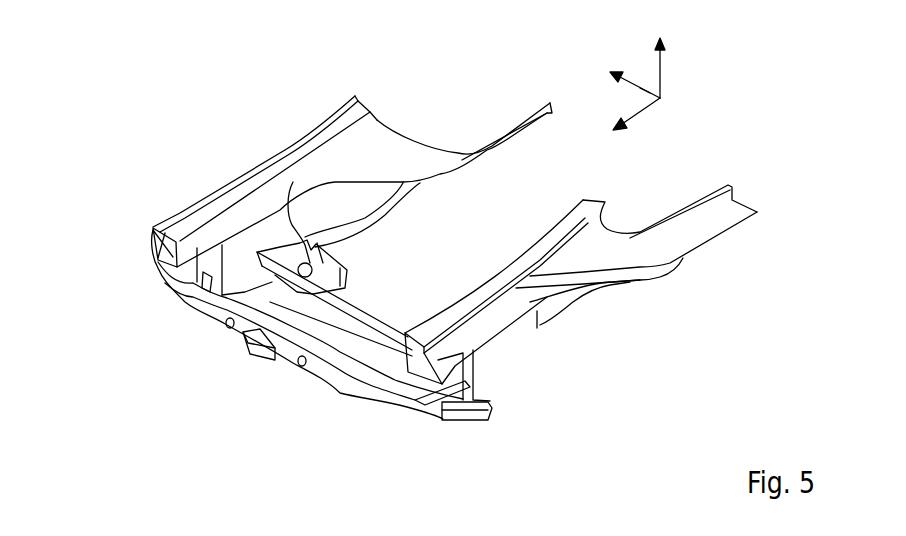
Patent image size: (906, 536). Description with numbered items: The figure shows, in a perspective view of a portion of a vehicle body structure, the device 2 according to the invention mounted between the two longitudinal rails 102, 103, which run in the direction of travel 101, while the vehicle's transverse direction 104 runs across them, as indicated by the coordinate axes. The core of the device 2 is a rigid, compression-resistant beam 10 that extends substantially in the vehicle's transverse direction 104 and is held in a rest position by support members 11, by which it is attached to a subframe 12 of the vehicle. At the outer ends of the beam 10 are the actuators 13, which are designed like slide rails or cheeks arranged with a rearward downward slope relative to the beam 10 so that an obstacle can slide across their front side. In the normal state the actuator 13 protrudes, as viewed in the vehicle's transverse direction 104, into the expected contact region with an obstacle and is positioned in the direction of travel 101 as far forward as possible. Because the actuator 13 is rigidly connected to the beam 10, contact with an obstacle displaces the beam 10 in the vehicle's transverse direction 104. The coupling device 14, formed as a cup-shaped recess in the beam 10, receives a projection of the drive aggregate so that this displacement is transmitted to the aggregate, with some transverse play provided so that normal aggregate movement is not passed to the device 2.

The device 2 is at (185, 308).
The beam 10 is at (340, 383).
The support members 11 is at (180, 290).
The subframe 12 is at (380, 320).
The actuator 13 is at (150, 253).
The coupling device 14 is at (247, 350).
The direction of travel 101 is at (645, 110).
The longitudinal rail 102 is at (219, 200).
The longitudinal rail 103 is at (484, 288).
The vehicle's transverse direction 104 is at (642, 87).